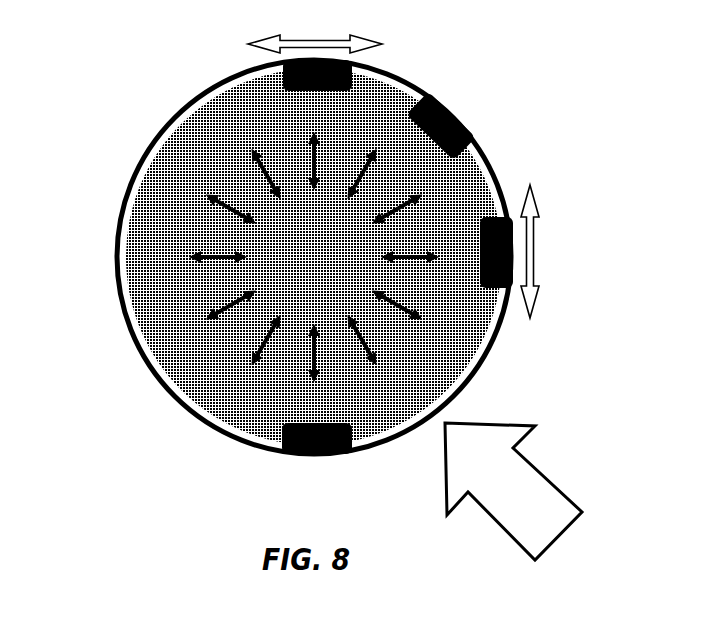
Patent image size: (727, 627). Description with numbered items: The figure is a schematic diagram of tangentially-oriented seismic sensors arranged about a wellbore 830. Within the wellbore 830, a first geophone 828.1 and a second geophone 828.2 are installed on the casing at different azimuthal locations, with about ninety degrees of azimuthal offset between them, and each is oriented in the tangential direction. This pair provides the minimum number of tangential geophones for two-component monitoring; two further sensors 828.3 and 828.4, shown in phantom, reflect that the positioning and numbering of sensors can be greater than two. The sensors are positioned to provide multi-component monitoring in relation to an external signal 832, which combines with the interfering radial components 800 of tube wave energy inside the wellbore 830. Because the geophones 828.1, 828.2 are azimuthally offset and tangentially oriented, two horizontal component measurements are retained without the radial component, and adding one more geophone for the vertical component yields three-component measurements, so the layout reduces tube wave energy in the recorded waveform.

The radial components of tube wave energy 800 is at (198, 282).
The wellbore 830 is at (148, 140).
The geophone #1 828.1 is at (355, 83).
The geophone #2 828.2 is at (490, 214).
The seismic sensor (geophone) 828.3 is at (457, 110).
The seismic sensor (geophone) 828.4 is at (318, 458).
The external signal 832 is at (521, 491).